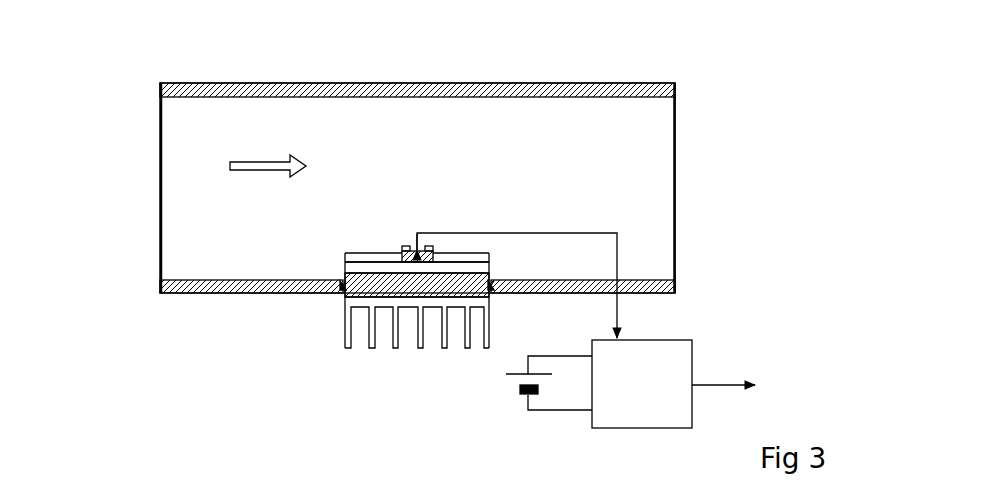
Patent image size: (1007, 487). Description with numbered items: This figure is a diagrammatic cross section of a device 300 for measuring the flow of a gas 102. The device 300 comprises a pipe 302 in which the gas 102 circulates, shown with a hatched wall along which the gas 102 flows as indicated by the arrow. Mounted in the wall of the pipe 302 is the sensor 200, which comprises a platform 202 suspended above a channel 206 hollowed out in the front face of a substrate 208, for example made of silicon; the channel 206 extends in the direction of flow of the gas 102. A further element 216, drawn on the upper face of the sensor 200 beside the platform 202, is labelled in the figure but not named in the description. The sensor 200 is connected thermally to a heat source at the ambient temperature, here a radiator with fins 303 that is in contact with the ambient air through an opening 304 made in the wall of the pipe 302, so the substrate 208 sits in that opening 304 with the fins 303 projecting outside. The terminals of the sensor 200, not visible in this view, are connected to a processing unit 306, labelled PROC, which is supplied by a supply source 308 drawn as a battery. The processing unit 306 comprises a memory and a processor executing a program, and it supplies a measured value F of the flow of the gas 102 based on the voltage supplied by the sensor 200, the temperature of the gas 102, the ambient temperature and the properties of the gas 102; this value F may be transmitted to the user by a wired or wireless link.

The device for measuring the flow of a gas 300 is at (131, 70).
The gas 102 is at (264, 162).
The sensor 200 is at (335, 248).
The platform 202 is at (412, 247).
The sensor substrate 216 is at (402, 250).
The channel 206 is at (343, 268).
The substrate 208 is at (360, 290).
The pipe 302 is at (190, 293).
The radiator with fins 303 is at (372, 348).
The opening 304 is at (492, 293).
The processing unit 306 is at (679, 340).
The supply source 308 is at (517, 394).